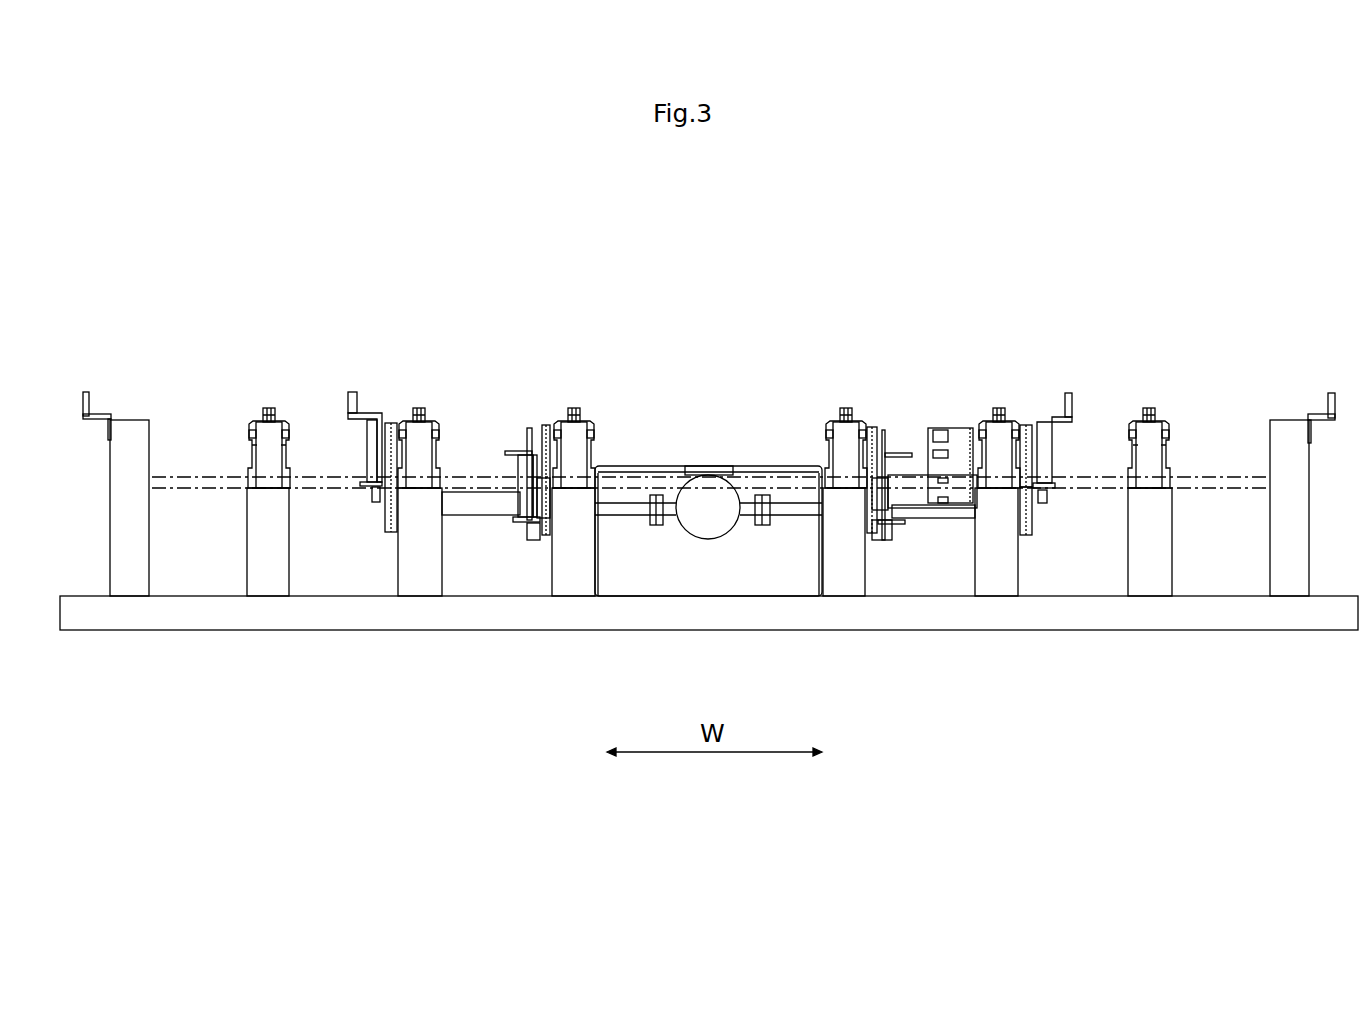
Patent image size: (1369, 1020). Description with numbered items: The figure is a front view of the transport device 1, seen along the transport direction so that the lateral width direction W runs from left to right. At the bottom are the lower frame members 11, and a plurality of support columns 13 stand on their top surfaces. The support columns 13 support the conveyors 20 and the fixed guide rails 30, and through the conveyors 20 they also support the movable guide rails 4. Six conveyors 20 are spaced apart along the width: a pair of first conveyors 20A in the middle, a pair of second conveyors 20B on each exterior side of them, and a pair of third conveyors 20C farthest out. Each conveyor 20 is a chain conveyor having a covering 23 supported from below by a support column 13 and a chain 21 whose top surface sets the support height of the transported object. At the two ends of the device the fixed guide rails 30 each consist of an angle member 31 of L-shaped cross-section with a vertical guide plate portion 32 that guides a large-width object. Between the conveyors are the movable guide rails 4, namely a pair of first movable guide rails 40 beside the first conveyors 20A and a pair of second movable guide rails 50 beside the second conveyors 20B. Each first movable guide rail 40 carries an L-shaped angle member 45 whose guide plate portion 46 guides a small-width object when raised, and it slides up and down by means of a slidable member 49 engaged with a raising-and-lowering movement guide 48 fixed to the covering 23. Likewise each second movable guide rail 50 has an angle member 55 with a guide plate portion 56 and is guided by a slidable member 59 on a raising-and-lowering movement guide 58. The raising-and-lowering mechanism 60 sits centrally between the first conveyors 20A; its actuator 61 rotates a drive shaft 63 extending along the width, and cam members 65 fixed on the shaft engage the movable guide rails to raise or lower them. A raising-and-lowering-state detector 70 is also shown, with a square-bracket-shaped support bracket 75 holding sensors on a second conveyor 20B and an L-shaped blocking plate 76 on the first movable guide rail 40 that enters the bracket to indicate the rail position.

The transport device 1 is at (172, 240).
The lower frame member 11 is at (124, 620).
The support column 13 is at (120, 500).
The conveyor 20 is at (729, 383).
The first conveyor 20A is at (830, 408).
The second conveyor 20B is at (1000, 398).
The third conveyor 20C is at (1165, 333).
The chain 21 is at (278, 408).
The covering 23 is at (250, 438).
The fixed guide rail 30 is at (695, 388).
The angle member 31 is at (90, 420).
The guide plate portion 32 is at (106, 412).
The movable guide rail 4 is at (720, 431).
The first movable guide rail 40 is at (718, 431).
The angle member 45 is at (520, 452).
The guide plate portion 46 is at (531, 428).
The raising-and-lowering movement guide 48 is at (877, 537).
The slidable member 49 is at (878, 518).
The second movable guide rail 50 is at (720, 411).
The angle member 55 is at (368, 425).
The guide plate portion 56 is at (352, 410).
The raising-and-lowering movement guide 58 is at (1028, 518).
The slidable member 59 is at (1028, 468).
The raising-and-lowering mechanism 60 is at (708, 531).
The actuator 61 is at (716, 528).
The drive shaft 63 is at (497, 514).
The cam member 65 is at (386, 518).
The raising-and-lowering-state detector 70 is at (953, 522).
The support bracket 75 is at (946, 428).
The blocking plate 76 is at (913, 497).